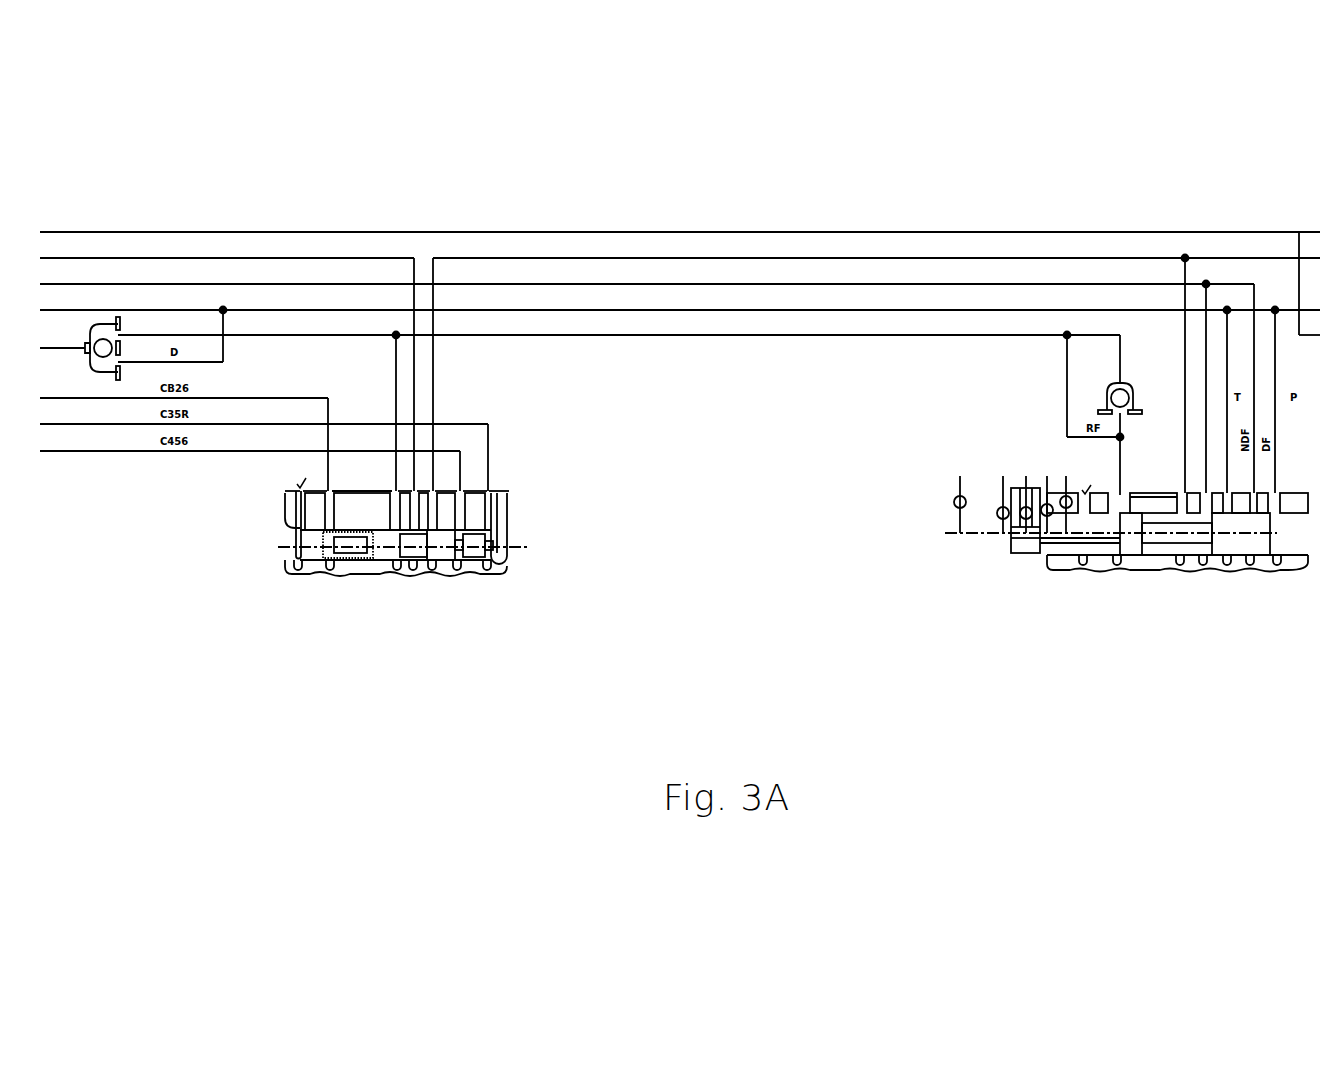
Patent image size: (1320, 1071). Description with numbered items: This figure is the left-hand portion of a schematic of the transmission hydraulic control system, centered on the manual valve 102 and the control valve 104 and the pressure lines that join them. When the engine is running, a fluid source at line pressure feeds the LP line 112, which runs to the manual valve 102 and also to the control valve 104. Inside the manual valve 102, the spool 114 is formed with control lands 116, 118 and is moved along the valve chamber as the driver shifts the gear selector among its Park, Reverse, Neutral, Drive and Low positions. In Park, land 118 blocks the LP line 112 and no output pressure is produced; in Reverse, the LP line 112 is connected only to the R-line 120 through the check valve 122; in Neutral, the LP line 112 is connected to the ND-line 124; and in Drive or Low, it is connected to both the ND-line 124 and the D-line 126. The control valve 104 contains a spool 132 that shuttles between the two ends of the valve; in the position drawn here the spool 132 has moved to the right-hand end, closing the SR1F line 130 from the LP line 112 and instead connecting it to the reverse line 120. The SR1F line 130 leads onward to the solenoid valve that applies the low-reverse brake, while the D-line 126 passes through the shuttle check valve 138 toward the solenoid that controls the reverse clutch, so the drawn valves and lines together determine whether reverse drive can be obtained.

The manual valve 102 is at (1126, 561).
The control valve 104 is at (376, 563).
The LP line 112 is at (852, 257).
The spool 114 is at (1168, 530).
The control land 116 is at (1127, 545).
The control land 118 is at (1250, 545).
The R-line 120 is at (817, 337).
The check valve 122 is at (1122, 383).
The ND-line 124 is at (618, 283).
The D-line 126 is at (508, 310).
The SR1F line 130 is at (137, 258).
The spool 132 is at (340, 547).
The shuttle check valve 138 is at (95, 372).